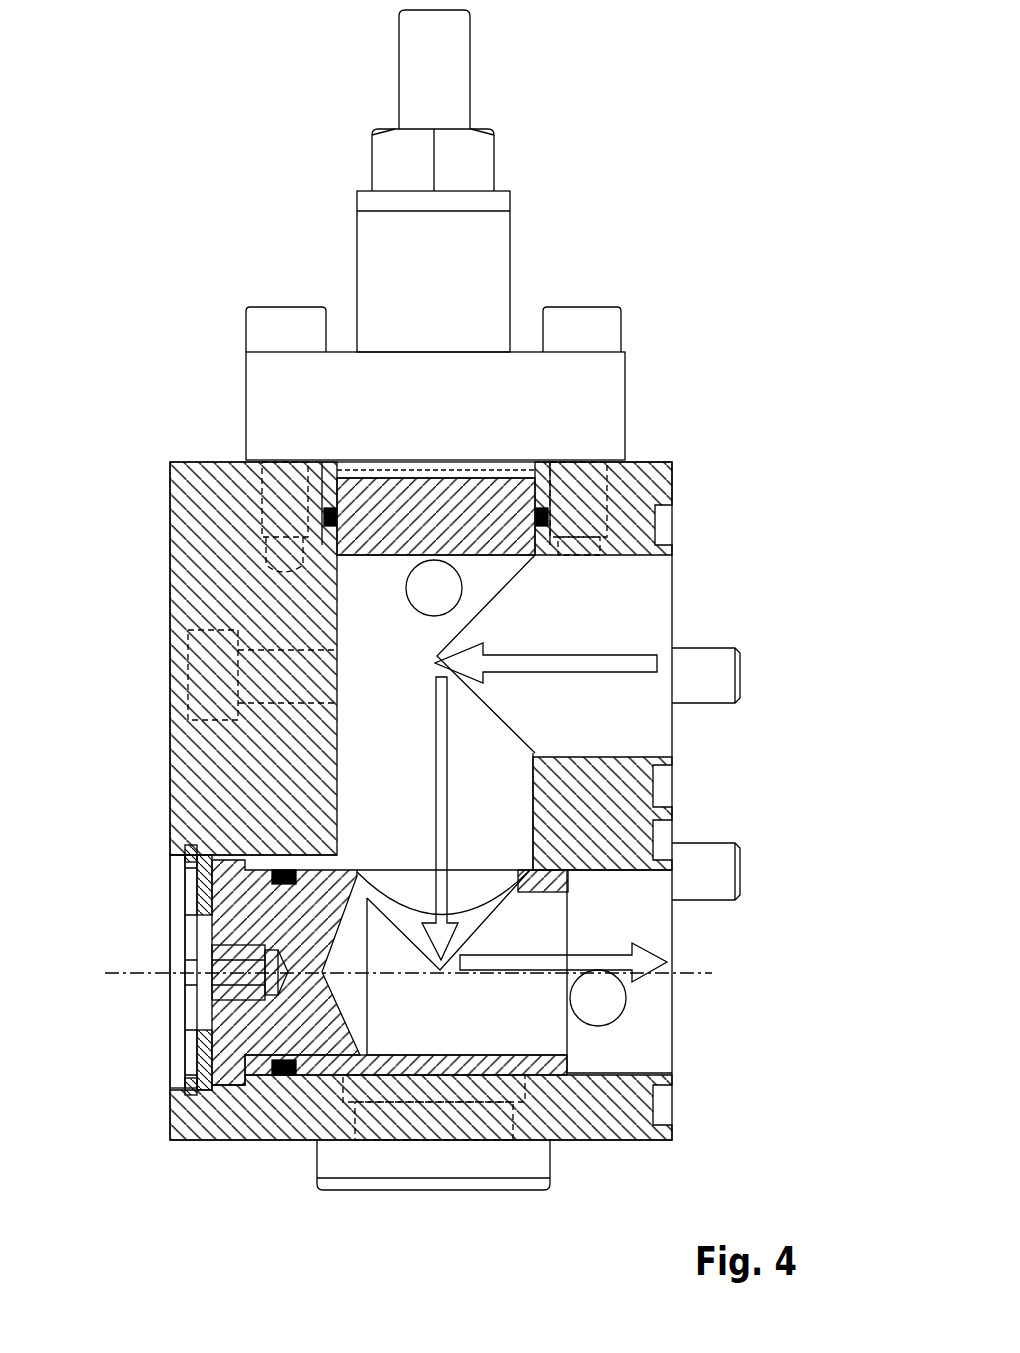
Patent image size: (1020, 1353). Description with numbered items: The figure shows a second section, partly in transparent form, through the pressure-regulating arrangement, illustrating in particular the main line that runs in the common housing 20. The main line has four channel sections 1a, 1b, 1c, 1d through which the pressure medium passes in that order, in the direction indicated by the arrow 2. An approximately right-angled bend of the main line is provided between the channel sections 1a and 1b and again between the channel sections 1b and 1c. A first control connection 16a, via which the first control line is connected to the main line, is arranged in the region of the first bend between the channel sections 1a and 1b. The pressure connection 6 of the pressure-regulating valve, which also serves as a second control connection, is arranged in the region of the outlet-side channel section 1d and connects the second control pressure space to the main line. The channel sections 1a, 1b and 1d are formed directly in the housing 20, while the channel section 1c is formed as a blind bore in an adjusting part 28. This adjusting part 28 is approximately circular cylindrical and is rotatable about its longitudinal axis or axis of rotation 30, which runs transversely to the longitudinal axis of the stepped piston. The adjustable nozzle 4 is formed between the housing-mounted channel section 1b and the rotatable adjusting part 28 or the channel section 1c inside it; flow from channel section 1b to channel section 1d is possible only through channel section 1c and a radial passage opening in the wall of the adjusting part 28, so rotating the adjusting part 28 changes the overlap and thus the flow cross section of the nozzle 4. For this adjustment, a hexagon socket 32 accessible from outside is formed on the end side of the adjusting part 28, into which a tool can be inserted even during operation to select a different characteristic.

The housing 20 is at (271, 801).
The channel section 1a is at (598, 733).
The channel section 1b is at (503, 828).
The channel section 1c is at (503, 1032).
The channel section 1d is at (640, 1065).
The arrow 2 is at (440, 863).
The adjustable nozzle 4 is at (505, 906).
The pressure connection 6 is at (598, 1000).
The first control connection 16a is at (434, 592).
The adjusting part 28 is at (248, 908).
The axis of rotation 30 is at (127, 976).
The hexagon socket 32 is at (298, 992).